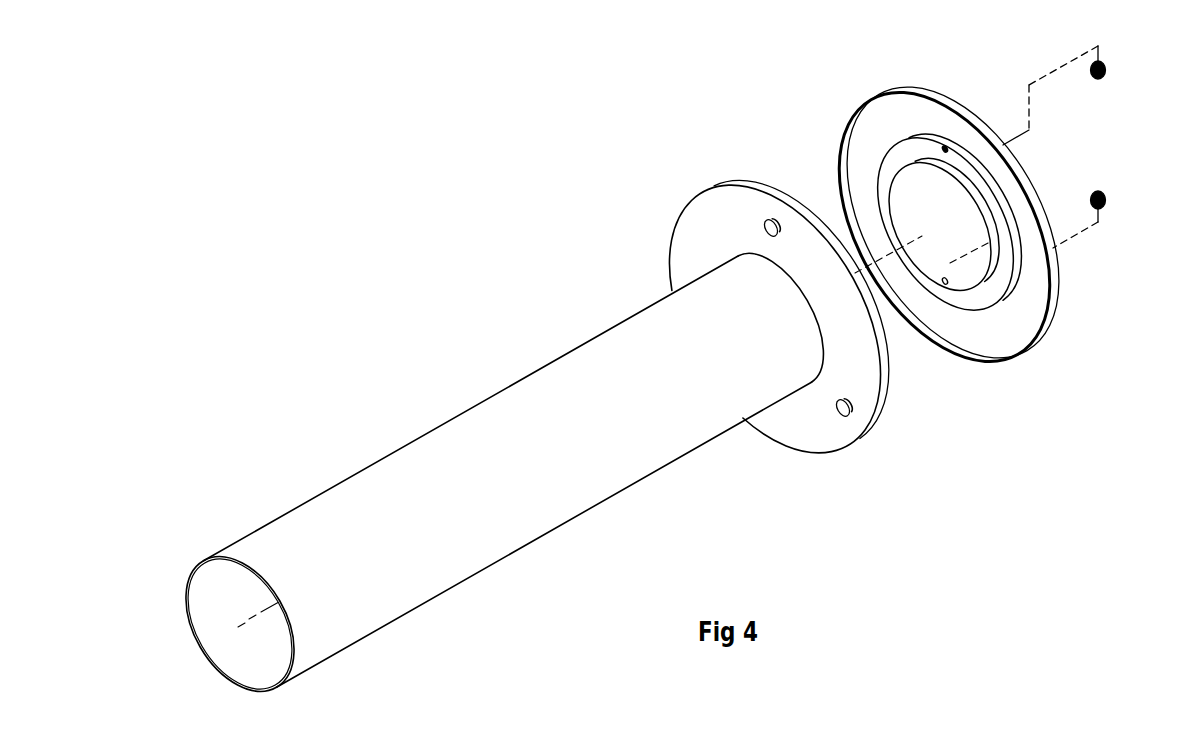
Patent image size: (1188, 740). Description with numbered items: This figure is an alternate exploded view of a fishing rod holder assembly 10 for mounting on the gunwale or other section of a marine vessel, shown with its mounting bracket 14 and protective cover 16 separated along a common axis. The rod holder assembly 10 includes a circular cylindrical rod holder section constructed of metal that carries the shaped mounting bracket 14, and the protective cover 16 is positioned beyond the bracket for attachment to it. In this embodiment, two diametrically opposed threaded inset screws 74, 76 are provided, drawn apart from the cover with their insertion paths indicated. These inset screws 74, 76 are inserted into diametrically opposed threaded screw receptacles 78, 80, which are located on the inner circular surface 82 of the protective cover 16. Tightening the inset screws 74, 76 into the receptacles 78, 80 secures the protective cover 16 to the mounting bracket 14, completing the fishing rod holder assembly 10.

The fishing rod holder assembly 10 is at (467, 537).
The mounting bracket 14 is at (758, 191).
The protective cover 16 is at (847, 110).
The threaded inset screw 74 is at (1102, 62).
The threaded inset screw 76 is at (1102, 188).
The threaded screw receptacle 78 is at (943, 152).
The threaded screw receptacle 80 is at (945, 278).
The inner circular surface 82 is at (903, 228).